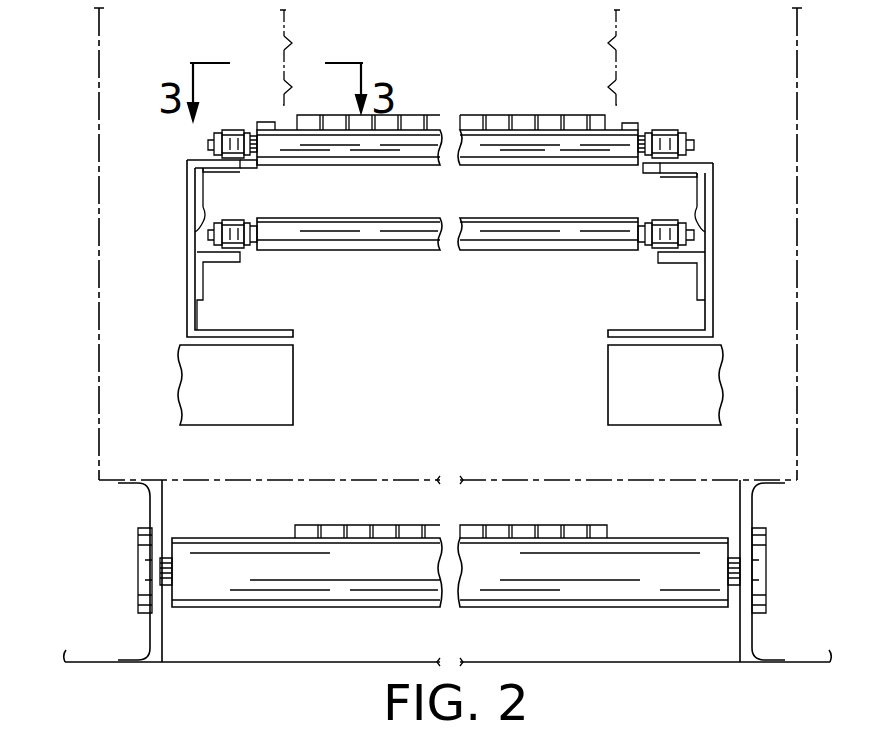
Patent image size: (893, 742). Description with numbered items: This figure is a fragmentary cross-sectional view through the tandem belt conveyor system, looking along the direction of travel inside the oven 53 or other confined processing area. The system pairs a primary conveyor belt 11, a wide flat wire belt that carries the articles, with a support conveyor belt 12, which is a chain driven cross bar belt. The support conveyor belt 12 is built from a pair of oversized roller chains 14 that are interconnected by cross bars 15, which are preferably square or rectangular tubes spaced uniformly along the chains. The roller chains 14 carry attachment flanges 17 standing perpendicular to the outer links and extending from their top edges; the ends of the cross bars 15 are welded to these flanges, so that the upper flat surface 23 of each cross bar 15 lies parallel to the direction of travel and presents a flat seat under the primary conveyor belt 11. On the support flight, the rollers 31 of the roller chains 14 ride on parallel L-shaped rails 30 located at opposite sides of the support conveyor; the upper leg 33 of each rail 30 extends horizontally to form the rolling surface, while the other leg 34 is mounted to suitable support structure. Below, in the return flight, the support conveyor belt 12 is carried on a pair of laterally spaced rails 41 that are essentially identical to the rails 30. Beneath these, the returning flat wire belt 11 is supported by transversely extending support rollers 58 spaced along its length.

The primary conveyor belt 11 is at (515, 105).
The support conveyor belt 12 is at (525, 258).
The roller chains 14 is at (192, 133).
The cross bars 15 is at (376, 260).
The attachment flanges 17 is at (266, 121).
The upper flat surface 23 is at (429, 116).
The support rails 30 is at (182, 185).
The rollers 31 is at (240, 219).
The upper leg 33 is at (226, 172).
The other leg 34 is at (199, 216).
The return rails 41 is at (221, 270).
The oven 53 is at (97, 240).
The support rollers 58 is at (330, 608).